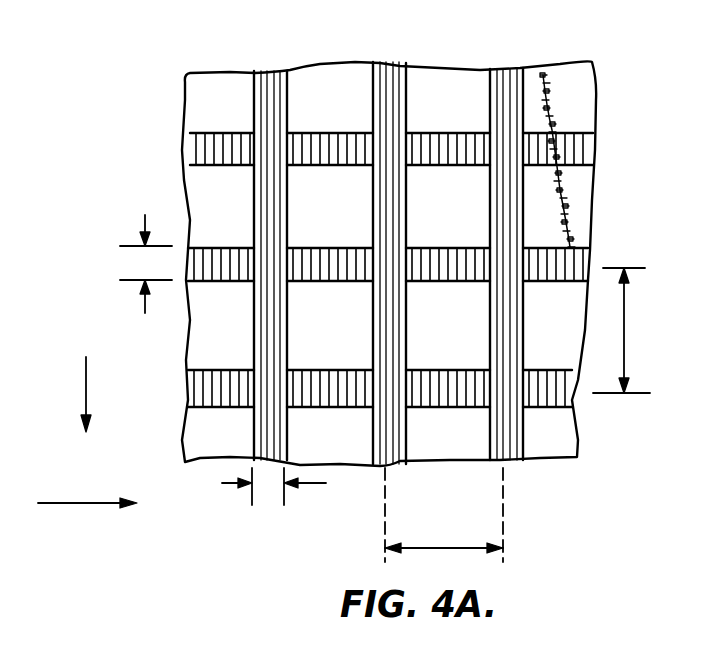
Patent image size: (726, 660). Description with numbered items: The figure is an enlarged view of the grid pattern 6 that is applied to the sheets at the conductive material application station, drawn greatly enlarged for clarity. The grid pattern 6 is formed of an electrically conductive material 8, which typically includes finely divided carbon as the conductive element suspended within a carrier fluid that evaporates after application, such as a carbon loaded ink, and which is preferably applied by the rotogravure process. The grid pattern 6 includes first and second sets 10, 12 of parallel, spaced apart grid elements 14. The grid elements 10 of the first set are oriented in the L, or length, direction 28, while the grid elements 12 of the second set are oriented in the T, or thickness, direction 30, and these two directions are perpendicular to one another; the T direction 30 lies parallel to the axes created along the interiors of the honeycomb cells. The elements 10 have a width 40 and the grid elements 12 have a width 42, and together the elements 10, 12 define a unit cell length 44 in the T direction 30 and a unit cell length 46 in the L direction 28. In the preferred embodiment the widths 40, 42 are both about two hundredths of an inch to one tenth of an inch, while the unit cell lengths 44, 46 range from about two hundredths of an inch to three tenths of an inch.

The grid pattern 6 is at (618, 64).
The electrically conductive material 8 is at (502, 210).
The first set of grid elements 10 is at (213, 262).
The second set of grid elements 12 is at (443, 243).
The grid elements 14 is at (566, 247).
The L direction 28 is at (75, 504).
The T direction 30 is at (84, 394).
The width 40 is at (147, 266).
The width 42 is at (262, 488).
The unit cell length 44 is at (627, 330).
The unit cell length 46 is at (425, 545).